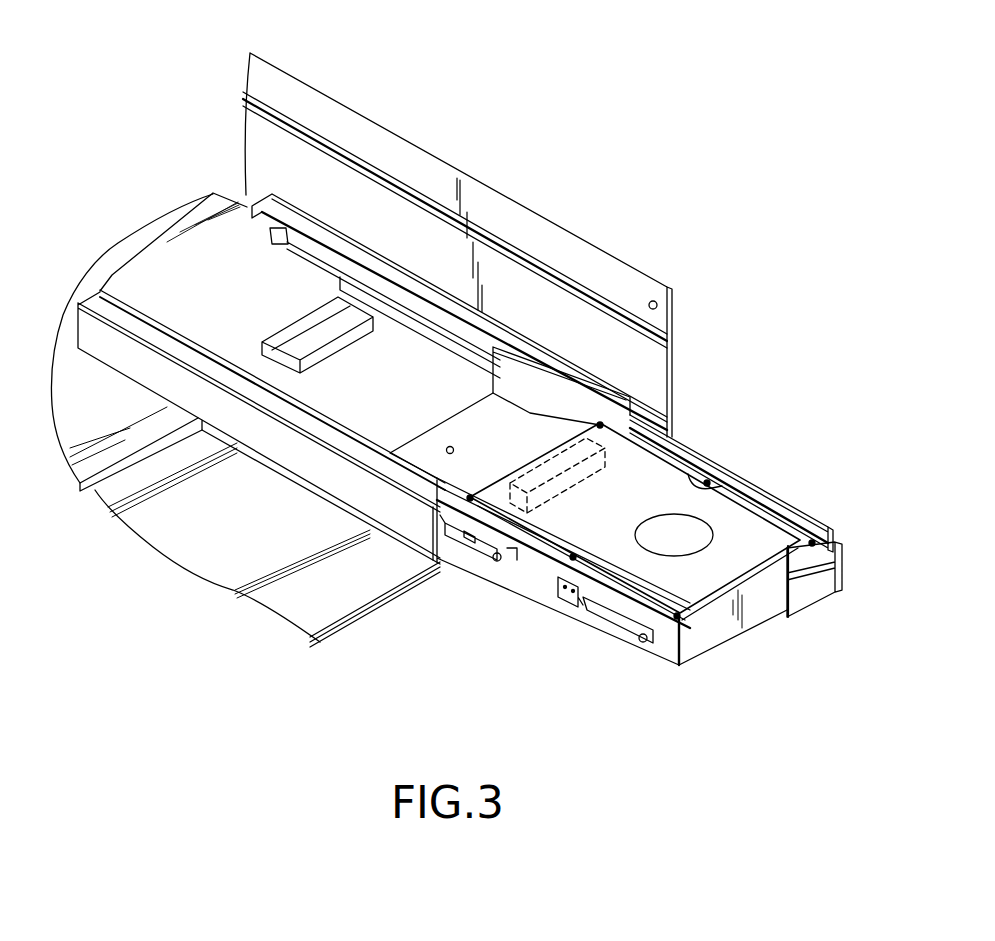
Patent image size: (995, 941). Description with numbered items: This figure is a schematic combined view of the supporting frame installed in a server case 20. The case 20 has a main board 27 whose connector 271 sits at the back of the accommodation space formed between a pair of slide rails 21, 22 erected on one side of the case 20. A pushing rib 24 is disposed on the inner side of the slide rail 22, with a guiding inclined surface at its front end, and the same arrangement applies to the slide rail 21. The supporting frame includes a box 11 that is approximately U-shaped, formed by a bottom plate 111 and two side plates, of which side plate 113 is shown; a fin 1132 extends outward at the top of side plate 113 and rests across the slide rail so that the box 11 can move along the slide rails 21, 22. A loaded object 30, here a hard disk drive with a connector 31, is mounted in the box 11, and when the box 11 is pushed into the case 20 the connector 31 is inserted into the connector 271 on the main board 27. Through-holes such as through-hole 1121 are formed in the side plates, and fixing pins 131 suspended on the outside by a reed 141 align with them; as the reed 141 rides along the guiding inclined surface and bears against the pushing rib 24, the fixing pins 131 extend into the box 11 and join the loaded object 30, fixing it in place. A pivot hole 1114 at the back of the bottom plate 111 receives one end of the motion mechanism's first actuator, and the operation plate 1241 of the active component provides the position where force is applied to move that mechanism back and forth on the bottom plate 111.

The box 11 is at (433, 418).
The bottom plate 111 is at (493, 415).
The pivot hole 1114 is at (446, 450).
The through-hole 1121 is at (517, 560).
The side plate 113 is at (552, 395).
The fin 1132 is at (793, 510).
The operation plate 1241 is at (813, 583).
The fixing pin 131 is at (497, 558).
The reed 141 is at (607, 630).
The server case 20 is at (317, 567).
The slide rail 21 is at (343, 480).
The slide rail 22 is at (503, 331).
The pushing rib 24 is at (428, 333).
The main board 27 is at (140, 257).
The connector 271 is at (320, 333).
The loaded object 30 is at (733, 513).
The connector 31 is at (575, 430).